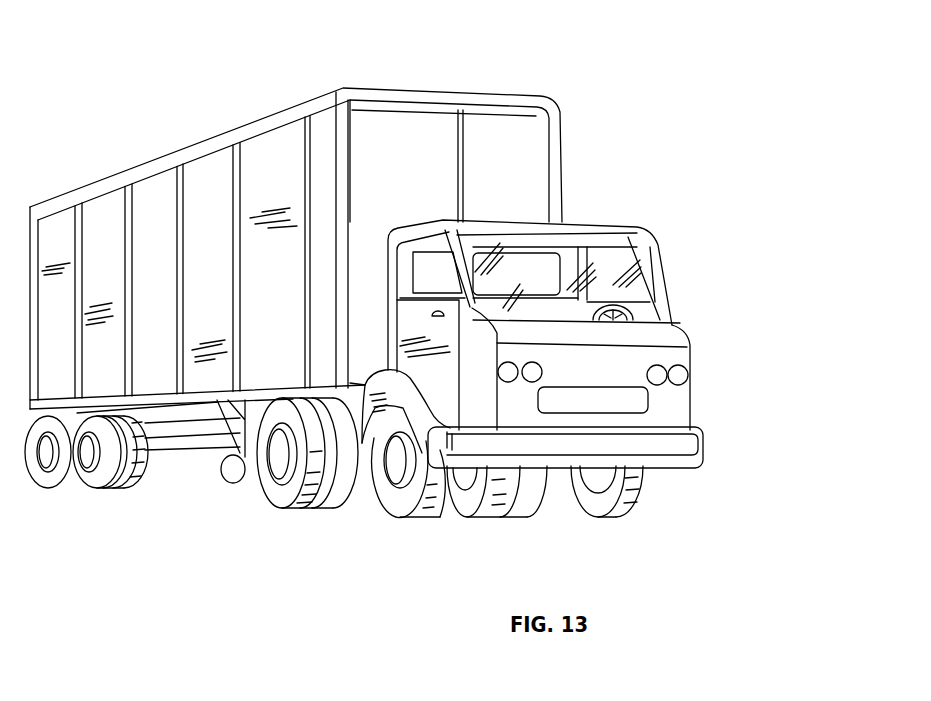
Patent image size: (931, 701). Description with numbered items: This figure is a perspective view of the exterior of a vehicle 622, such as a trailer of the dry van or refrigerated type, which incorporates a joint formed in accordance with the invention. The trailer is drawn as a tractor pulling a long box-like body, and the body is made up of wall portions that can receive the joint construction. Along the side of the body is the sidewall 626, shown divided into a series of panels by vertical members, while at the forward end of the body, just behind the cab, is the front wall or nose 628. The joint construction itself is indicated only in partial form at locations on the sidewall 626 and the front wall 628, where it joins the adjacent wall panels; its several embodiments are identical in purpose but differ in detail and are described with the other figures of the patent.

The vehicle 622 is at (574, 106).
The sidewall 626 is at (152, 212).
The front wall (nose) 628 is at (397, 148).